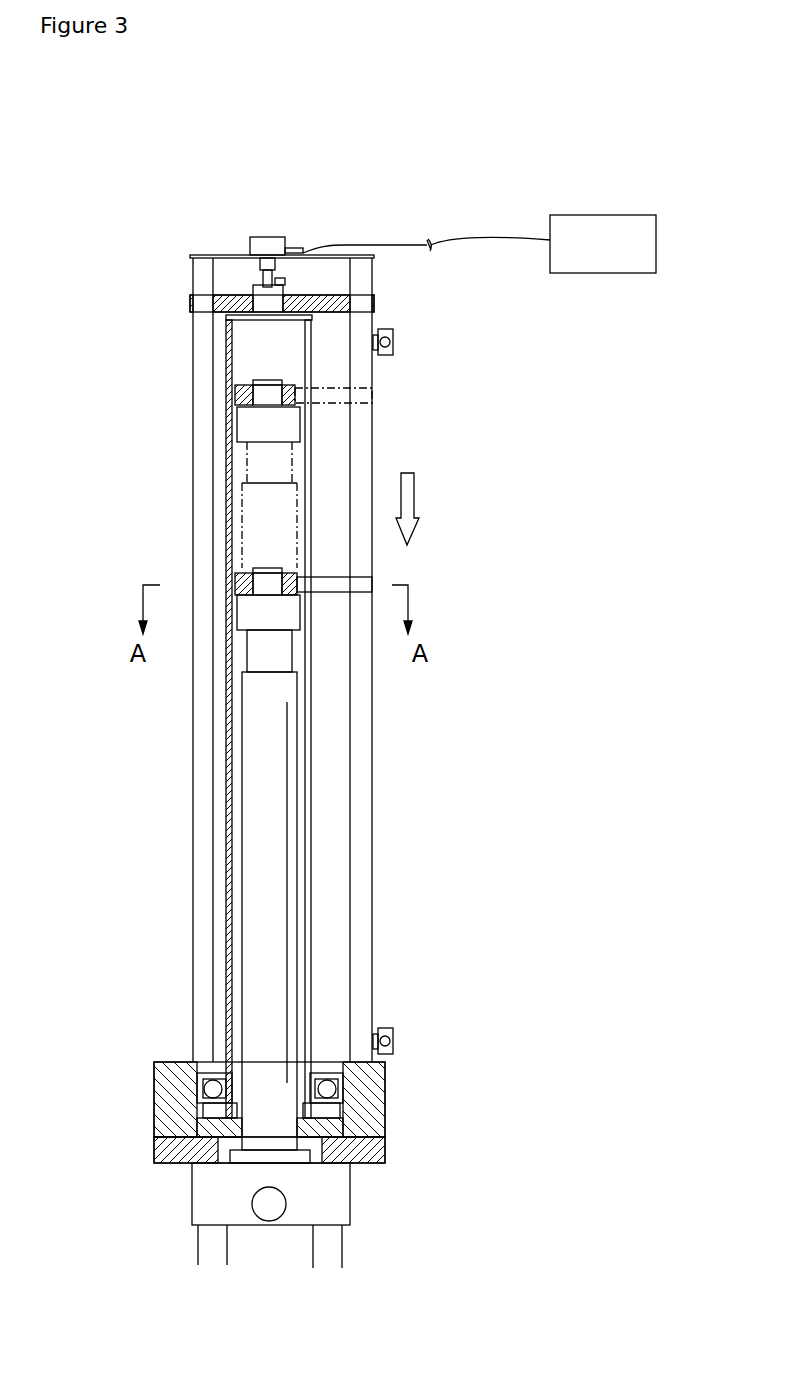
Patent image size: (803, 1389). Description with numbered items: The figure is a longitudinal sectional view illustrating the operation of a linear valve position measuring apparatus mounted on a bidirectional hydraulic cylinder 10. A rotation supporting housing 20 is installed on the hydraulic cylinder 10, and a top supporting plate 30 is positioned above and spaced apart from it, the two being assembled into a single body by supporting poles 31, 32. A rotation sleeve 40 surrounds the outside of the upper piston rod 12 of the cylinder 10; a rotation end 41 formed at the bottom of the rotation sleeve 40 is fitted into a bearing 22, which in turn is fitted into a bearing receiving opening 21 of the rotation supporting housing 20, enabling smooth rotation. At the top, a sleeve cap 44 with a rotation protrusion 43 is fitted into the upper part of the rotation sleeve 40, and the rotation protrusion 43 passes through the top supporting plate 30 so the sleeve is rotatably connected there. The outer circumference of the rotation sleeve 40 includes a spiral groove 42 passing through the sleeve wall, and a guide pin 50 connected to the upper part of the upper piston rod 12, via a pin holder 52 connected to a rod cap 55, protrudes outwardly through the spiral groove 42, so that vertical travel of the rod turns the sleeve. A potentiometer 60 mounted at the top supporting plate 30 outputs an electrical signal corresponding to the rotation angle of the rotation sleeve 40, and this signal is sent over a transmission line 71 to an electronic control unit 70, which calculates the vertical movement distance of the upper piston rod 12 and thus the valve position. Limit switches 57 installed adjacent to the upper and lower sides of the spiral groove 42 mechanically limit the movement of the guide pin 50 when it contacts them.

The bidirectional hydraulic cylinder 10 is at (213, 1190).
The upper piston rod 12 is at (272, 902).
The rotation supporting housing 20 is at (373, 1107).
The bearing receiving opening 21 is at (210, 1090).
The bearing 22 is at (205, 1110).
The top supporting plate 30 is at (221, 298).
The supporting pole 31 is at (205, 423).
The supporting pole 32 is at (362, 447).
The rotation sleeve 40 is at (227, 763).
The rotation end 41 is at (362, 1142).
The spiral groove 42 is at (312, 712).
The rotation protrusion 43 is at (253, 283).
The sleeve cap 44 is at (267, 317).
The guide pin 50 is at (362, 585).
The pin holder 52 is at (242, 570).
The rod cap 55 is at (250, 617).
The limit switch 57 is at (393, 340).
The potentiometer 60 is at (268, 245).
The electronic control unit 70 is at (600, 268).
The transmission line 71 is at (458, 237).